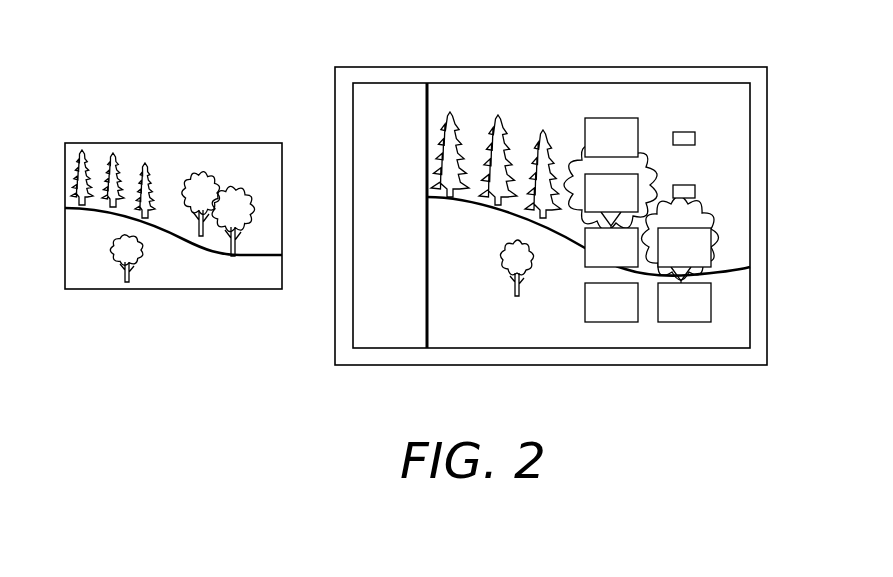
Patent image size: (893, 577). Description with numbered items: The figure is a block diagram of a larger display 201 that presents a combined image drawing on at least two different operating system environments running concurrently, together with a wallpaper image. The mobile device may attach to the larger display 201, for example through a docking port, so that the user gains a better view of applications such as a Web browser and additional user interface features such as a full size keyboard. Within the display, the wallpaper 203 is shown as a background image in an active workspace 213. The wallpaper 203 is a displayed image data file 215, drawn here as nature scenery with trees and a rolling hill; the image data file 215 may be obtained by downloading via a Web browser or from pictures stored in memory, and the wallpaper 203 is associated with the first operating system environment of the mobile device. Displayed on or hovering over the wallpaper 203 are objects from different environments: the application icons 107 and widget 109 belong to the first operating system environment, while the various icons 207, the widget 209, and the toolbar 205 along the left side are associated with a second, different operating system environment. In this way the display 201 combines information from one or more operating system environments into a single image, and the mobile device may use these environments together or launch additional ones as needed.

The larger display 201 is at (767, 92).
The wallpaper 203 is at (588, 162).
The toolbar 205 is at (388, 90).
The icons 207 is at (610, 118).
The active workspace 213 is at (530, 118).
The image data file 215 is at (174, 143).
The application icons 107 is at (683, 132).
The widget 109 is at (711, 248).
The widget 209 is at (711, 300).